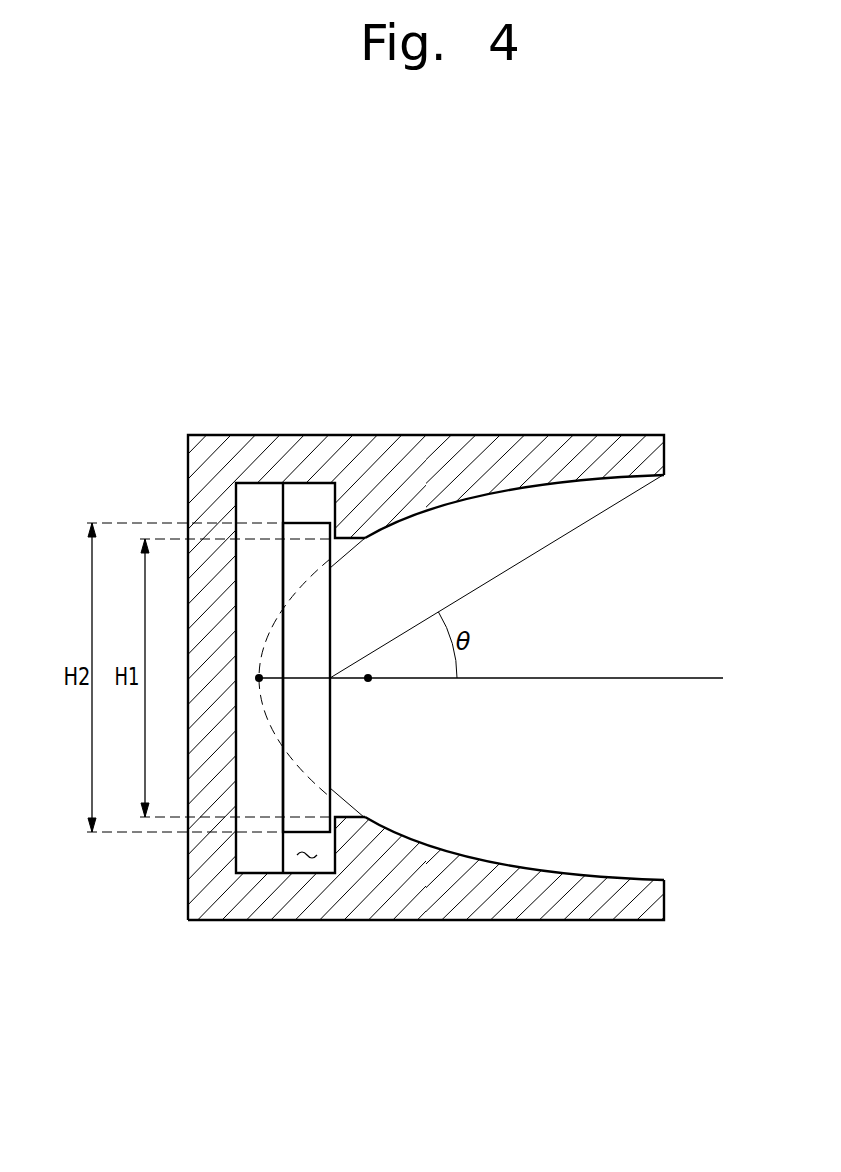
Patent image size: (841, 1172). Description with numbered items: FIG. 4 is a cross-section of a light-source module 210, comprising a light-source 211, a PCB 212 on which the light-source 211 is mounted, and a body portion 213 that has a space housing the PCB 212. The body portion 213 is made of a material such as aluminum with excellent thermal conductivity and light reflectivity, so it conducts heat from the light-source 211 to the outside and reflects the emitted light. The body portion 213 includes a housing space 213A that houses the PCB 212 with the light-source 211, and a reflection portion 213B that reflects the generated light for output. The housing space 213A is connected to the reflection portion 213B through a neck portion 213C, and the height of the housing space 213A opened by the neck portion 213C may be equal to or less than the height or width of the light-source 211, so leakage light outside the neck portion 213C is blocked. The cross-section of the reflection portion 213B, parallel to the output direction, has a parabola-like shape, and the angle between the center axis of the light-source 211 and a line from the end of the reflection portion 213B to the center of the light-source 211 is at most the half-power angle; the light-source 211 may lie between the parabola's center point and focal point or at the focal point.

The ultrasonic transducer assembly 210 is at (430, 352).
The light-source 211 is at (303, 560).
The PCB 212 is at (257, 502).
The body portion 213 is at (393, 452).
The housing space 213A is at (301, 860).
The reflection portion 213B is at (516, 866).
The neck portion 213C is at (352, 815).